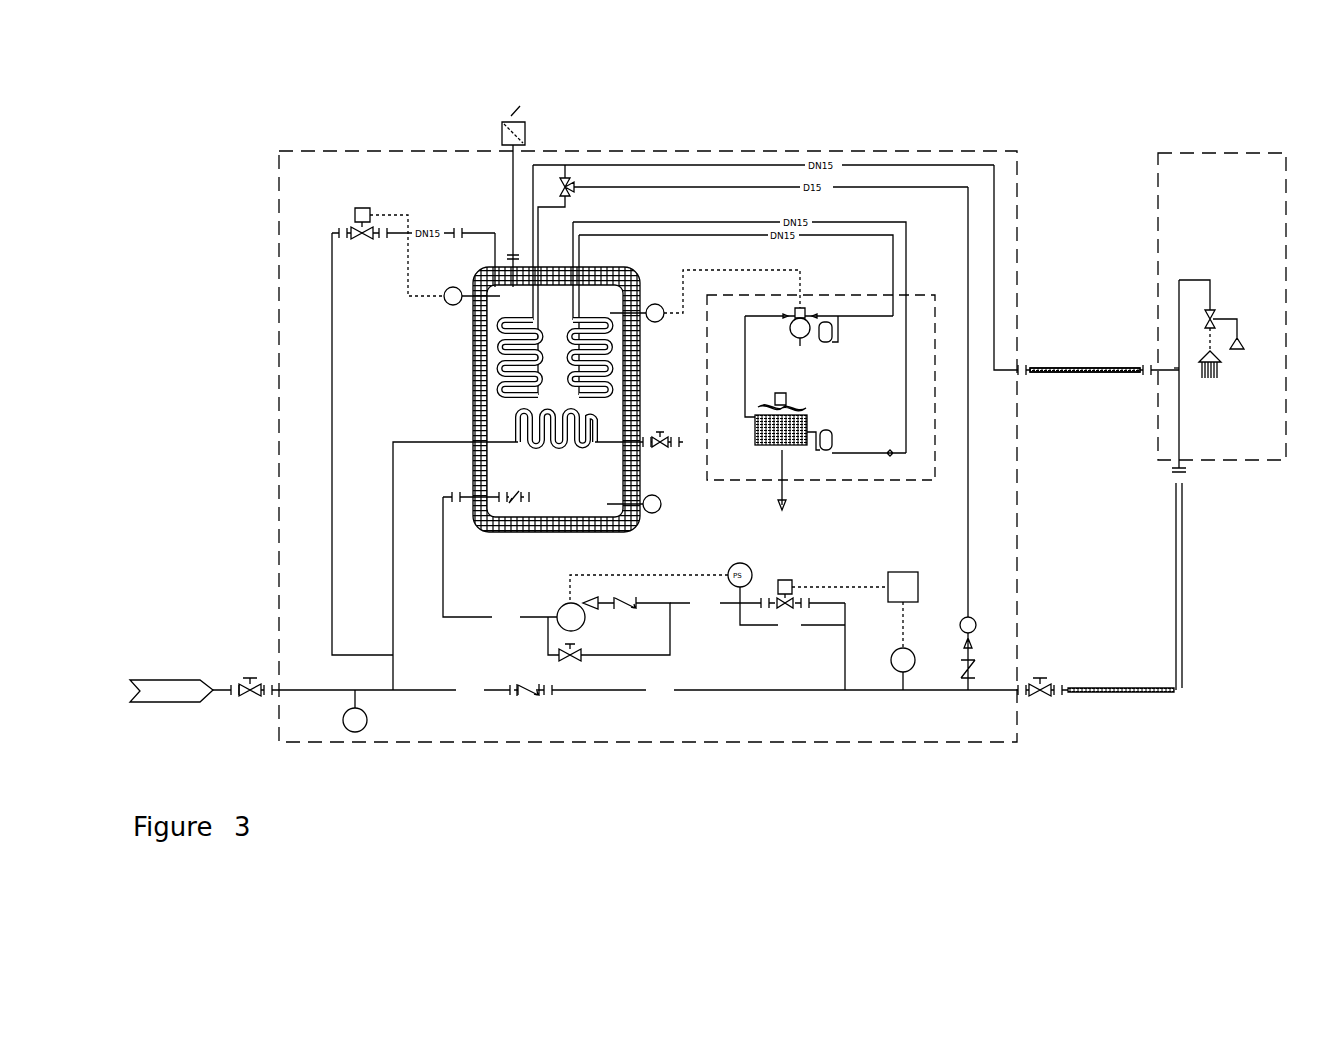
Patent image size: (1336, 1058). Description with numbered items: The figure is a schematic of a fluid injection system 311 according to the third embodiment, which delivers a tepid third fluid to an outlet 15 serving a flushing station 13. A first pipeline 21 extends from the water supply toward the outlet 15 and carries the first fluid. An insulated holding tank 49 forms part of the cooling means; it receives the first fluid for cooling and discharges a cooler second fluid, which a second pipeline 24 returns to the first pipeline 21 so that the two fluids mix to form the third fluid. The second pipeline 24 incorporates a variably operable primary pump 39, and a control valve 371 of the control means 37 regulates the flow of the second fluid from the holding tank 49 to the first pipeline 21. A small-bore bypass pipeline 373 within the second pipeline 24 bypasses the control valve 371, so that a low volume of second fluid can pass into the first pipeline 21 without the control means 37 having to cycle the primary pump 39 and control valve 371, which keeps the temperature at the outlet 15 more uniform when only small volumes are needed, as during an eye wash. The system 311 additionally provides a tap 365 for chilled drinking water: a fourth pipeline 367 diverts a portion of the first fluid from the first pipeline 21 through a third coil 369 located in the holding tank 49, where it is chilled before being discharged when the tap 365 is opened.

The fluid injection system 311 is at (786, 90).
The flushing station 13 is at (1208, 152).
The outlet 15 is at (1213, 318).
The insulated holding tank 49 is at (473, 342).
The third coil 369 is at (522, 413).
The fourth pipeline 367 is at (393, 527).
The tap 365 is at (685, 447).
The first pipeline 21 is at (428, 690).
The primary pump 39 is at (575, 623).
The bypass pipeline 373 is at (738, 606).
The control valve 371 is at (785, 605).
The second pipeline 24 is at (845, 657).
The control means 37 is at (920, 600).